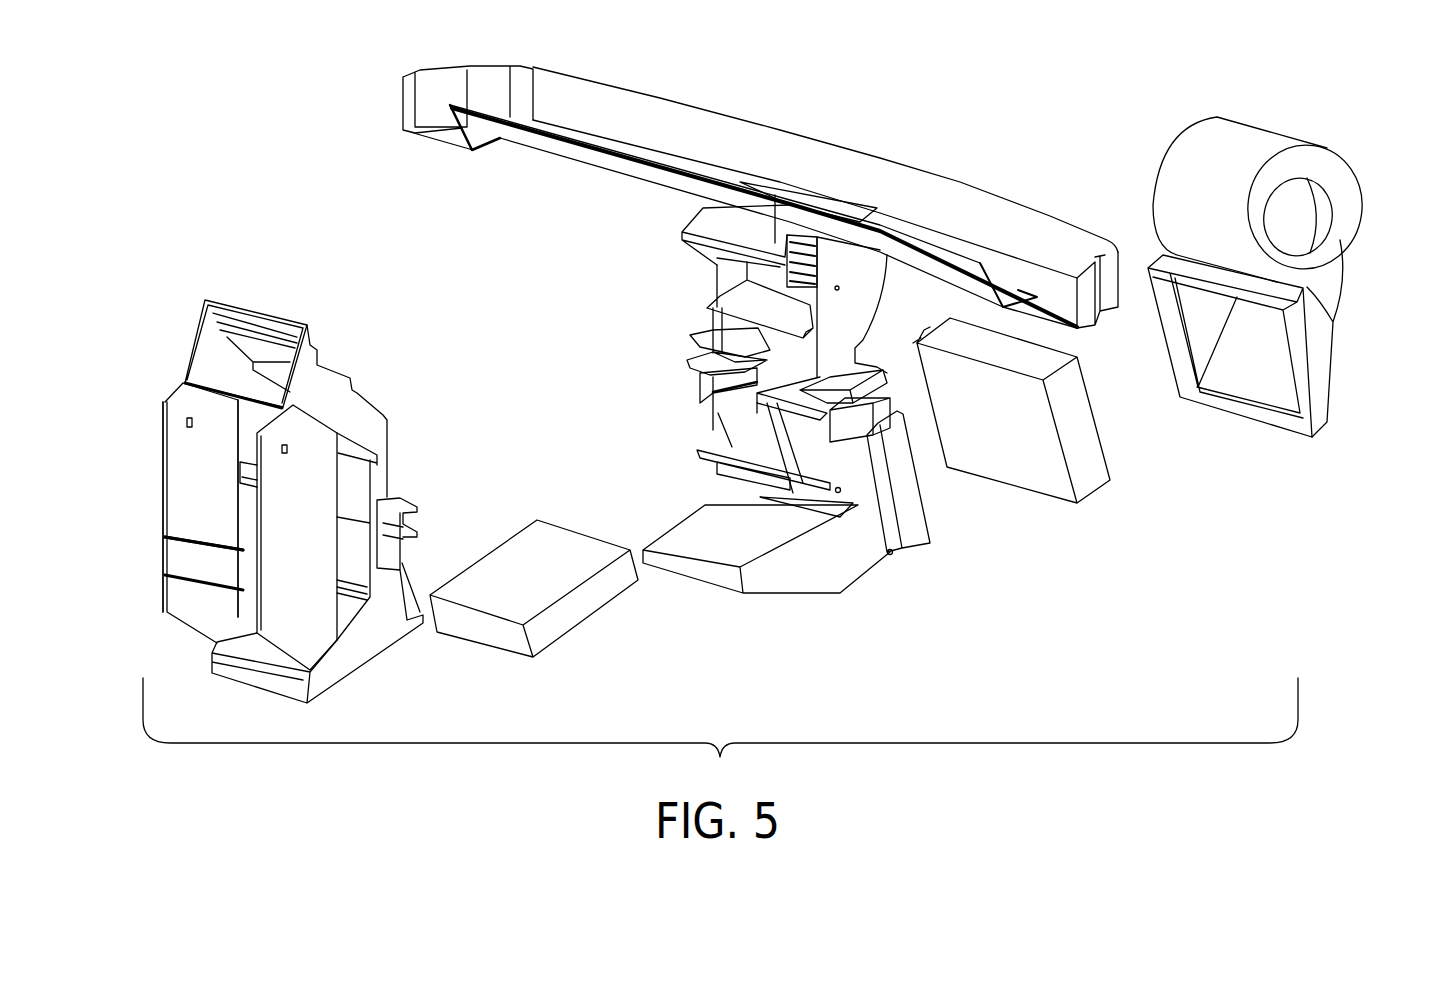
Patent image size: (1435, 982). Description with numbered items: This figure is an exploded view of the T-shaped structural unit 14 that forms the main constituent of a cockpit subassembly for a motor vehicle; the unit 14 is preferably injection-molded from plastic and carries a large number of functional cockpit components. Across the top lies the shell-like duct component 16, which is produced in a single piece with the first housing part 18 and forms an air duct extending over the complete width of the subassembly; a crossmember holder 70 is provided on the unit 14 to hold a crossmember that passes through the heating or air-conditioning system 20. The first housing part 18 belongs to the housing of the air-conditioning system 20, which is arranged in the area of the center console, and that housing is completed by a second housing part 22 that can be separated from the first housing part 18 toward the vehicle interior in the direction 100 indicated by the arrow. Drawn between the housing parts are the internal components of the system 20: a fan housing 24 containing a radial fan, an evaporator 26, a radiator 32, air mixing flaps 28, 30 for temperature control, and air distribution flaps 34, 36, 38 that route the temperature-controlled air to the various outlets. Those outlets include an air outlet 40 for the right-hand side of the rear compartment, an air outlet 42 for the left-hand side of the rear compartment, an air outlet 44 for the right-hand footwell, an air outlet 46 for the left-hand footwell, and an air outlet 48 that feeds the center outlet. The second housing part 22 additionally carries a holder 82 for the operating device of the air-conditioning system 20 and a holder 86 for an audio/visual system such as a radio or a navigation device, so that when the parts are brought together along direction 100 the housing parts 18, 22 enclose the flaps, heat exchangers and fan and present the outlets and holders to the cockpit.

The T-shaped structural unit 14 is at (366, 192).
The shell-like duct component 16 is at (703, 128).
The first housing part 18 is at (855, 555).
The heating or air-conditioning system 20 is at (1232, 482).
The second housing part 22 is at (373, 643).
The fan housing 24 is at (1340, 240).
The evaporator 26 is at (1037, 463).
The air mixing flap 28 is at (800, 518).
The air mixing flap 30 is at (697, 455).
The radiator 32 is at (577, 608).
The air distribution flap 34 is at (735, 372).
The air distribution flap 36 is at (820, 377).
The air distribution flap 38 is at (740, 297).
The air outlet 40 is at (827, 440).
The air outlet 42 is at (703, 393).
The air outlet 44 is at (880, 392).
The air outlet 46 is at (693, 350).
The air outlet 48 is at (212, 345).
The crossmember holder 70 is at (778, 240).
The holder 82 is at (185, 434).
The holder 86 is at (190, 560).
The direction 100 is at (480, 430).